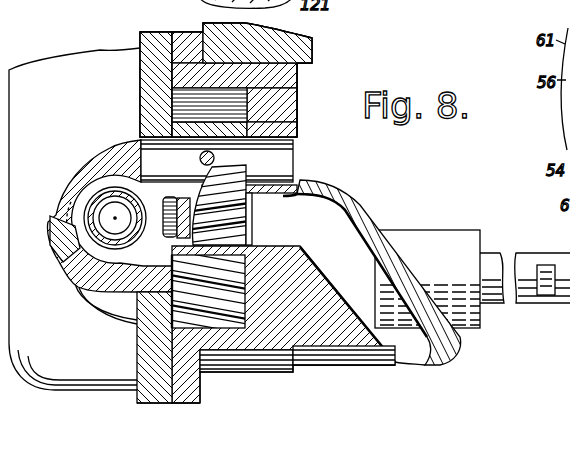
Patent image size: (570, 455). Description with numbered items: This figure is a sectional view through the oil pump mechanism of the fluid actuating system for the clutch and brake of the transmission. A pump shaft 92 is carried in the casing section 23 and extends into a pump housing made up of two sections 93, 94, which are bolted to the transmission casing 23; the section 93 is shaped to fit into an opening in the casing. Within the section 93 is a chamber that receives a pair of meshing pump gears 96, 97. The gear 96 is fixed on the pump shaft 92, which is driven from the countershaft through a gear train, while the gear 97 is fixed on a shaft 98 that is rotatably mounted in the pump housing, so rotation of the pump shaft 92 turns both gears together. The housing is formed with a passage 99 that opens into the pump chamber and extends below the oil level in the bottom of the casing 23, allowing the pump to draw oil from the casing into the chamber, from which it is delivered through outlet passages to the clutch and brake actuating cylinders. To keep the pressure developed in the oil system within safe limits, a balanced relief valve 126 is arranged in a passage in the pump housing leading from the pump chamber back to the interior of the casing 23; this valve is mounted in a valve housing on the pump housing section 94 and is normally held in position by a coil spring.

The casing section 23 is at (308, 41).
The pump shaft 92 is at (492, 305).
The pump housing section 93 is at (281, 100).
The pump housing section 94 is at (146, 78).
The pump gear 96 is at (187, 305).
The pump gear 97 is at (228, 201).
The shaft 98 is at (294, 158).
The passage 99 is at (396, 364).
The balanced relief valve 126 is at (86, 233).